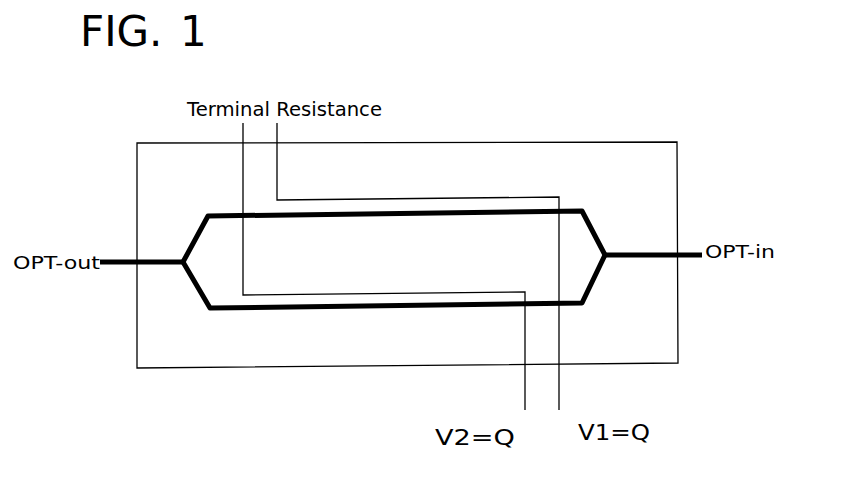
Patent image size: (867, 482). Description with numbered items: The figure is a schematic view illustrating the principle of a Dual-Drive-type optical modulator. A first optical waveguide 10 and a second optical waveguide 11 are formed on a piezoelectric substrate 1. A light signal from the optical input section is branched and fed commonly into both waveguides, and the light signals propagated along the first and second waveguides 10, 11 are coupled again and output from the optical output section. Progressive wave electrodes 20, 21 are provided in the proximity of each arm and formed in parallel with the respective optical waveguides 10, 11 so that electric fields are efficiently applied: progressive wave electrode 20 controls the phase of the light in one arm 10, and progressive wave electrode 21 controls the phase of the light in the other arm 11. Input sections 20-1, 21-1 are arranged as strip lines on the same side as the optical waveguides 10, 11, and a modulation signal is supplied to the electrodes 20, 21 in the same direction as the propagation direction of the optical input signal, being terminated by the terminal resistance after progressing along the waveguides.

The piezoelectric substrate 1 is at (477, 141).
The first optical waveguide 10 is at (465, 213).
The second optical waveguide 11 is at (387, 305).
The progressive wave electrode 20 is at (418, 200).
The input section 20-1 is at (563, 337).
The progressive wave electrode 21 is at (412, 292).
The input section 21-1 is at (525, 327).